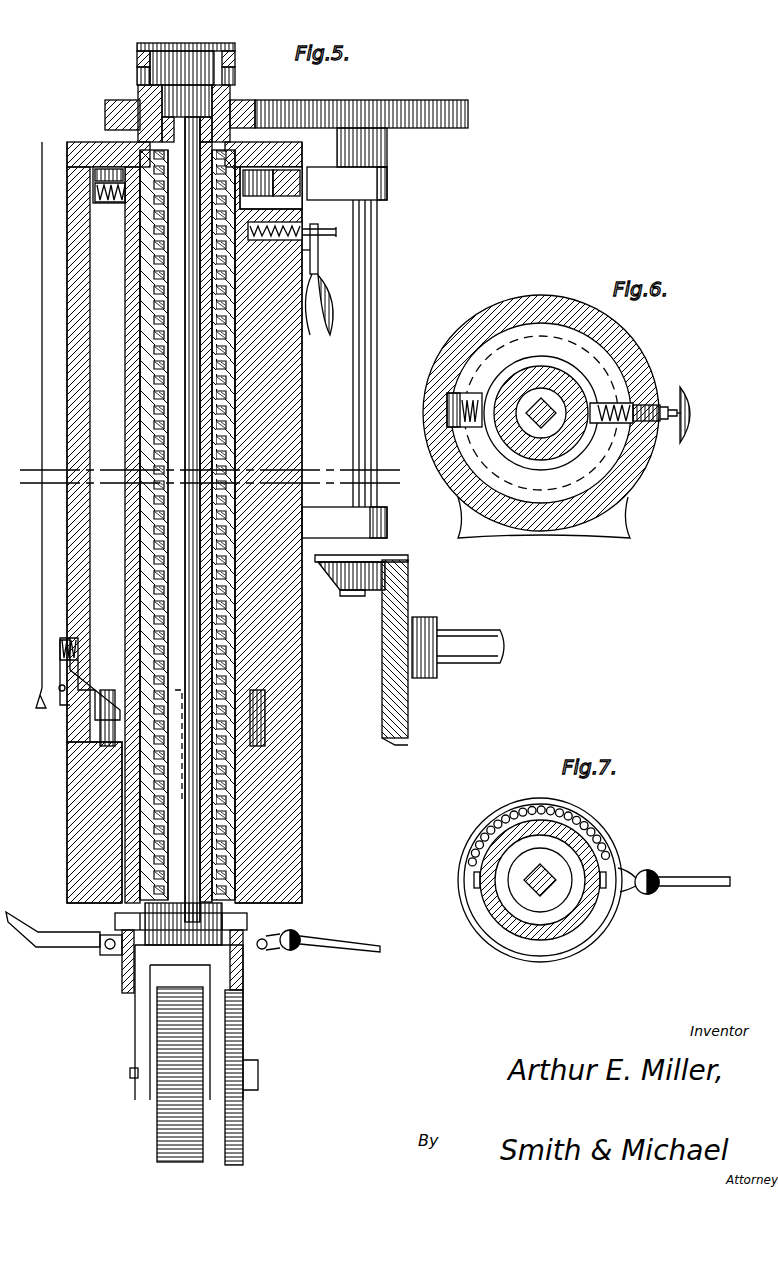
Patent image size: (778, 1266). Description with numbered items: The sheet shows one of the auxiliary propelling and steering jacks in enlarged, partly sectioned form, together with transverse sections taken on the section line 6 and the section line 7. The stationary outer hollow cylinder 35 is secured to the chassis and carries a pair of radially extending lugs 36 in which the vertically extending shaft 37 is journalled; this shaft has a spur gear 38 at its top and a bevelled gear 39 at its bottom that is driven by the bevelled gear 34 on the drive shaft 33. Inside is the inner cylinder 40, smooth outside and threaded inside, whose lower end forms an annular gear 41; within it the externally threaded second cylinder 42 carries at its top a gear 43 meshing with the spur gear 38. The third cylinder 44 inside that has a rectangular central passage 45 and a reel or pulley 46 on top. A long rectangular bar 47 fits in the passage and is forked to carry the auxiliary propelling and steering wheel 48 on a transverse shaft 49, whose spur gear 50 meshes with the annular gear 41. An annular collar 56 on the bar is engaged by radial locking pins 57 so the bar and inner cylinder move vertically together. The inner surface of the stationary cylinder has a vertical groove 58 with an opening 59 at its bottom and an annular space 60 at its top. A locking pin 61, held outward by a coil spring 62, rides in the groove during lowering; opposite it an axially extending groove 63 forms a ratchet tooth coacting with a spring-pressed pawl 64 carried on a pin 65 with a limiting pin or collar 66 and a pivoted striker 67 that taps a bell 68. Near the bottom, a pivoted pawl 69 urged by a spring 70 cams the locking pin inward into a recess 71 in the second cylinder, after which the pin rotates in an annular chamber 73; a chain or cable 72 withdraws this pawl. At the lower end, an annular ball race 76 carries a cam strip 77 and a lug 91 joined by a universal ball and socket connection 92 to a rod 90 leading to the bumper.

In FIG. 5, the section line 6— 6 is at (444, 172).
In FIG. 5, the section line 7— 7 is at (297, 919).
In FIG. 5, the drive shaft 33 is at (462, 640).
In FIG. 5, the bevelled gear 34 is at (400, 725).
In FIG. 5, the outer hollow cylinder 35 is at (288, 420).
In FIG. 6, the outer hollow cylinder 35 is at (648, 375).
In FIG. 5, the radially extending lugs 36 is at (375, 195).
In FIG. 5, the vertically extending shaft 37 is at (375, 308).
In FIG. 5, the spur gear 38 is at (455, 118).
In FIG. 5, the bevelled gear 39 is at (338, 592).
In FIG. 5, the inner cylinder 40 is at (225, 828).
In FIG. 6, the inner cylinder 40 is at (566, 455).
In FIG. 5, the annular gear 41 is at (126, 995).
In FIG. 5, the second cylinder 42 is at (235, 780).
In FIG. 5, the gear 43 is at (105, 112).
In FIG. 5, the third cylinder 44 is at (190, 352).
In FIG. 6, the third cylinder 44 is at (533, 392).
In FIG. 6, the rectangular central passage 45 is at (538, 432).
In FIG. 5, the reel or pulley 46 is at (190, 55).
In FIG. 5, the bar 47 is at (175, 598).
In FIG. 7, the bar 47 is at (548, 896).
In FIG. 5, the auxiliary propelling and steering wheel 48 is at (160, 1118).
In FIG. 5, the transverse shaft 49 is at (130, 1072).
In FIG. 5, the spur gear 50 is at (246, 1104).
In FIG. 5, the annular collar 56 is at (172, 946).
In FIG. 5, the radial locking pins 57 is at (115, 918).
In FIG. 7, the radial locking pins 57 is at (602, 876).
In FIG. 5, the vertical groove 58 is at (119, 535).
In FIG. 6, the vertical groove 58 is at (492, 400).
In FIG. 5, the opening 59 is at (95, 732).
In FIG. 5, the annular space 60 is at (262, 200).
In FIG. 5, the locking pin 61 is at (122, 185).
In FIG. 6, the locking pin 61 is at (480, 418).
In FIG. 5, the coil spring 62 is at (108, 206).
In FIG. 6, the coil spring 62 is at (486, 396).
In FIG. 5, the axially extending groove 63 is at (314, 338).
In FIG. 6, the axially extending groove 63 is at (611, 400).
In FIG. 5, the spring-pressed pawl 64 is at (271, 193).
In FIG. 6, the spring-pressed pawl 64 is at (611, 432).
In FIG. 5, the pin 65 is at (292, 225).
In FIG. 6, the pin 65 is at (646, 445).
In FIG. 5, the pin or collar 66 is at (312, 232).
In FIG. 6, the pin or collar 66 is at (664, 405).
In FIG. 5, the pivoted striker 67 is at (316, 270).
In FIG. 6, the pivoted striker 67 is at (680, 440).
In FIG. 5, the bell 68 is at (333, 300).
In FIG. 6, the bell 68 is at (695, 414).
In FIG. 5, the pivoted pawl 69 is at (68, 705).
In FIG. 5, the spring 70 is at (64, 638).
In FIG. 5, the recess 71 is at (177, 749).
In FIG. 5, the chain or cable 72 is at (25, 415).
In FIG. 5, the annular chamber 73 is at (265, 712).
In FIG. 5, the annular ball race 76 is at (266, 952).
In FIG. 7, the annular ball race 76 is at (598, 842).
In FIG. 5, the cam strip 77 is at (78, 946).
In FIG. 5, the rod 90 is at (352, 940).
In FIG. 7, the rod 90 is at (696, 876).
In FIG. 5, the lug 91 is at (282, 955).
In FIG. 7, the lug 91 is at (626, 898).
In FIG. 5, the universal ball and socket connection 92 is at (294, 950).
In FIG. 7, the universal ball and socket connection 92 is at (649, 895).